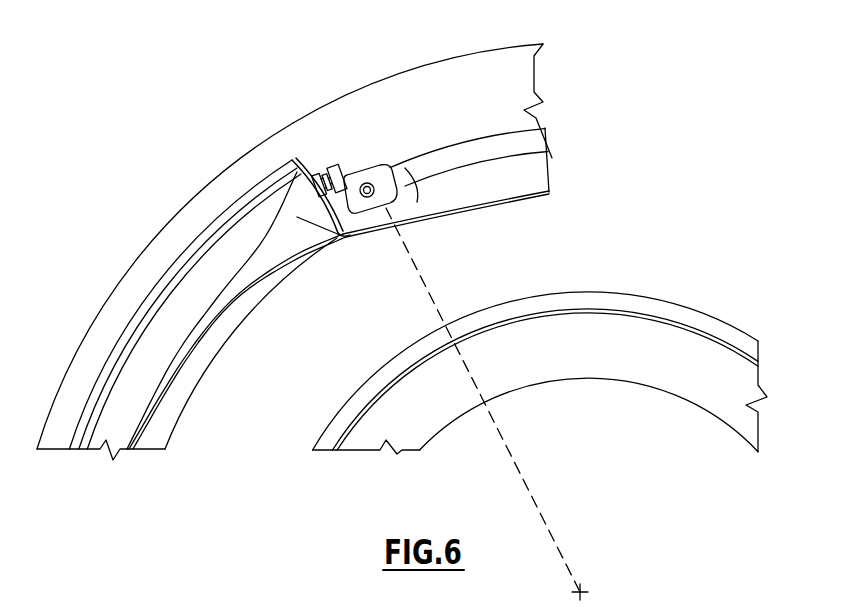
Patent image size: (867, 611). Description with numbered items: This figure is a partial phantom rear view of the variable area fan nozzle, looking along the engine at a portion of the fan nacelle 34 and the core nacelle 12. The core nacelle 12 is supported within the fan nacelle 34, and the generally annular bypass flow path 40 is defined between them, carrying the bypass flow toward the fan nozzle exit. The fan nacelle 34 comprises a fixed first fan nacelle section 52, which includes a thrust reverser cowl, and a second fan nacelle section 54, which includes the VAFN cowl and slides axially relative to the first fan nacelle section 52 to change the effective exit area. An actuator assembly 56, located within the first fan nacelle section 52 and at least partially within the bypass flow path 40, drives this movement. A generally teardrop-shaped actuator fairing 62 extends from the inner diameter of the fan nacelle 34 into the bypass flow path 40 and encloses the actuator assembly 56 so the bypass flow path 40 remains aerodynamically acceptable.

The core nacelle 12 is at (360, 435).
The fan nacelle 34 is at (273, 137).
The bypass flow path 40 is at (366, 316).
The first fan nacelle section 52 is at (489, 91).
The second fan nacelle section 54 is at (520, 150).
The actuator assembly 56 is at (352, 172).
The actuator fairing 62 is at (393, 204).